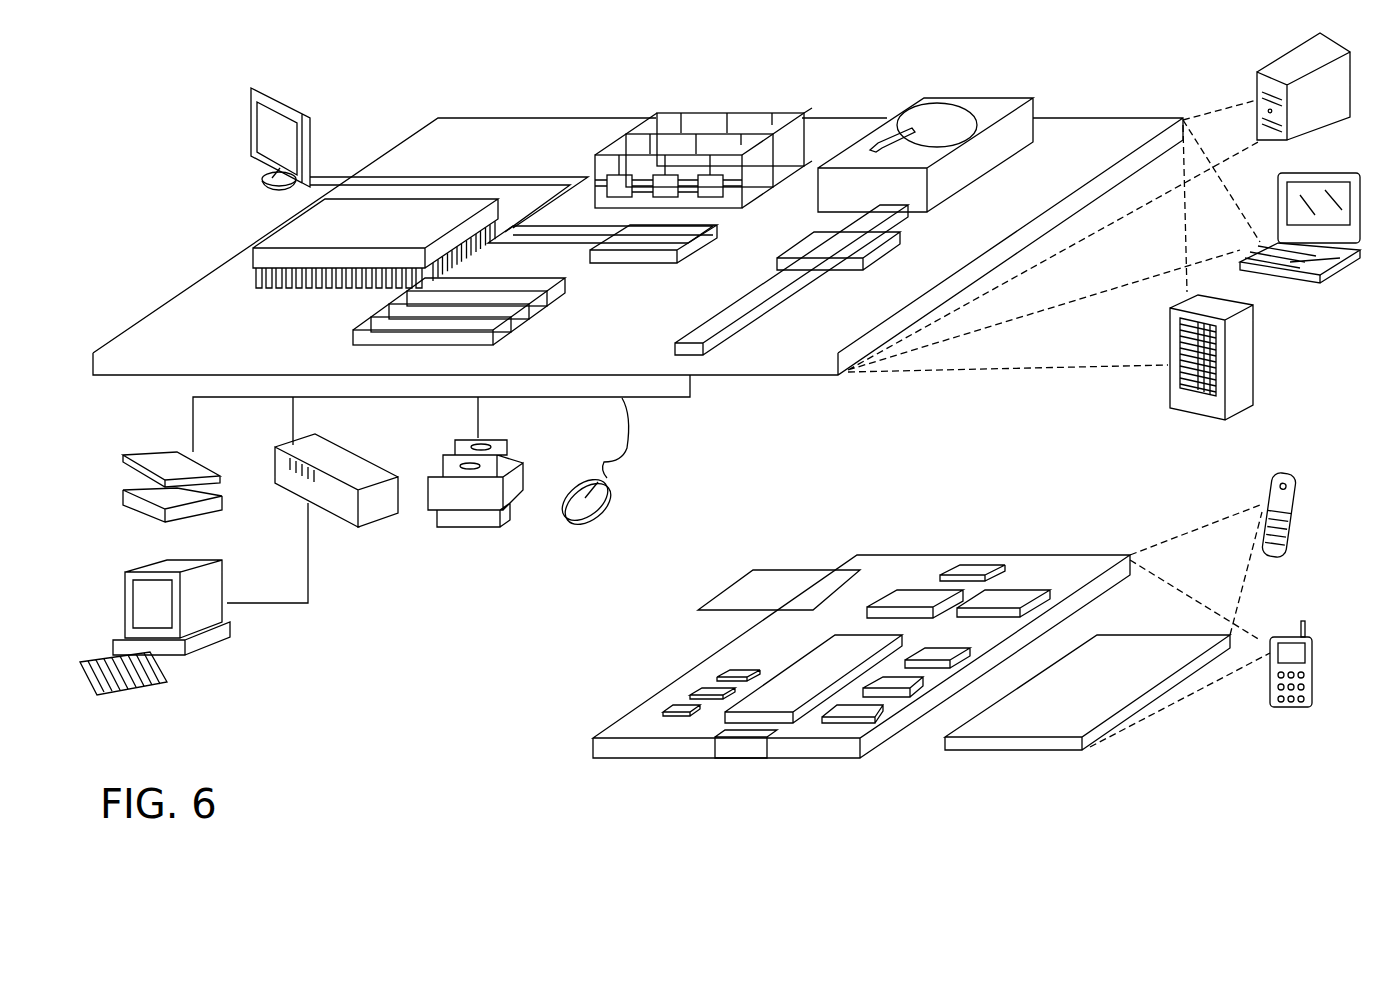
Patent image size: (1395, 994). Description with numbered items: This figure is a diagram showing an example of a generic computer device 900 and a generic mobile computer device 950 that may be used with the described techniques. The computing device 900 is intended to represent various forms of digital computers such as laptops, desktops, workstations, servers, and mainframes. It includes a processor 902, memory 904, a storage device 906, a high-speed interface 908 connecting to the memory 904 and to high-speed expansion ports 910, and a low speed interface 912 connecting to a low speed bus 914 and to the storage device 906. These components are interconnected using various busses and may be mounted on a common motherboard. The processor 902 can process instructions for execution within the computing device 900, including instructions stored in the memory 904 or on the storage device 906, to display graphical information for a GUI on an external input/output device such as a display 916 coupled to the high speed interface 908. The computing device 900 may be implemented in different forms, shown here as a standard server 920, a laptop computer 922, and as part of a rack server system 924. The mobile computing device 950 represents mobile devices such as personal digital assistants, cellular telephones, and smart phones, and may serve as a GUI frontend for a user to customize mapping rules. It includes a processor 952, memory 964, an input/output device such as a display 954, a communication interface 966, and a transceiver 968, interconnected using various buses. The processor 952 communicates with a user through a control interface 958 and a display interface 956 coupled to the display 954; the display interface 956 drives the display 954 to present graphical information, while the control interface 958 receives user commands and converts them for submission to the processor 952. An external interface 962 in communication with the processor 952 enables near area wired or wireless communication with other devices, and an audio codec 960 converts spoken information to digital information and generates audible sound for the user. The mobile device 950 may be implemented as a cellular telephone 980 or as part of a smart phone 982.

The generic computer device 900 is at (384, 62).
The processor 902 is at (278, 232).
The memory 904 is at (733, 116).
The storage device 906 is at (969, 96).
The high-speed interface 908 is at (665, 240).
The high-speed expansion ports 910 is at (387, 312).
The low speed interface 912 is at (806, 244).
The low speed bus 914 is at (694, 340).
The display 916 is at (254, 86).
The standard server 920 is at (1268, 62).
The laptop computer 922 is at (1335, 170).
The rack server system 924 is at (1256, 360).
The generic mobile computer device 950 is at (546, 768).
The processor 952 is at (782, 682).
The display 954 is at (1128, 654).
The display interface 956 is at (882, 728).
The control interface 958 is at (912, 684).
The audio codec 960 is at (942, 650).
The external interface 962 is at (743, 752).
The memory 964 is at (693, 688).
The communication interface 966 is at (910, 588).
The transceiver 968 is at (1012, 596).
The cellular telephone 980 is at (1272, 470).
The smart phone 982 is at (1285, 635).